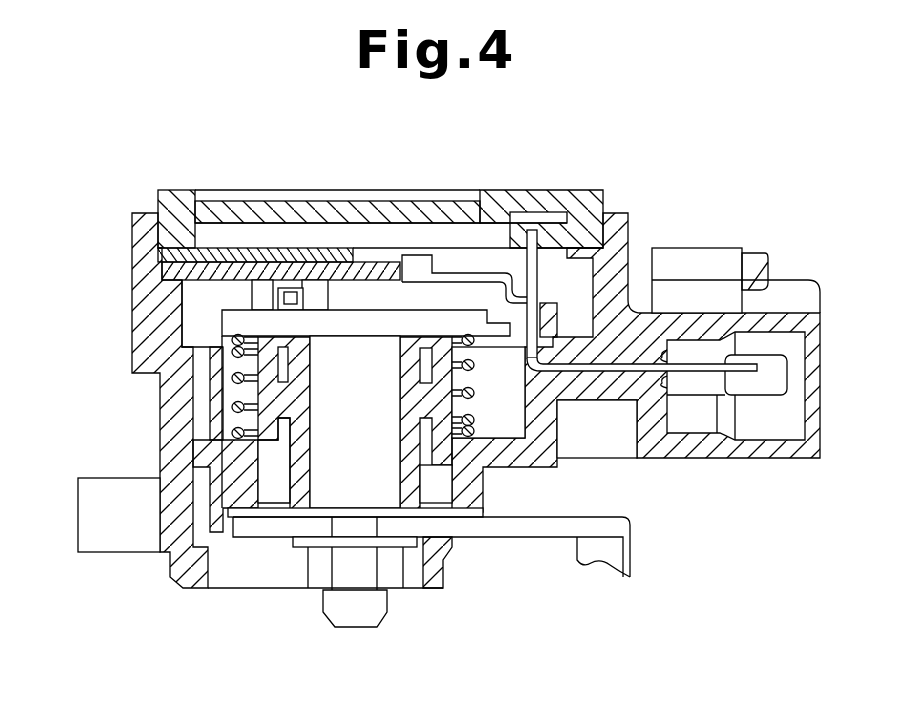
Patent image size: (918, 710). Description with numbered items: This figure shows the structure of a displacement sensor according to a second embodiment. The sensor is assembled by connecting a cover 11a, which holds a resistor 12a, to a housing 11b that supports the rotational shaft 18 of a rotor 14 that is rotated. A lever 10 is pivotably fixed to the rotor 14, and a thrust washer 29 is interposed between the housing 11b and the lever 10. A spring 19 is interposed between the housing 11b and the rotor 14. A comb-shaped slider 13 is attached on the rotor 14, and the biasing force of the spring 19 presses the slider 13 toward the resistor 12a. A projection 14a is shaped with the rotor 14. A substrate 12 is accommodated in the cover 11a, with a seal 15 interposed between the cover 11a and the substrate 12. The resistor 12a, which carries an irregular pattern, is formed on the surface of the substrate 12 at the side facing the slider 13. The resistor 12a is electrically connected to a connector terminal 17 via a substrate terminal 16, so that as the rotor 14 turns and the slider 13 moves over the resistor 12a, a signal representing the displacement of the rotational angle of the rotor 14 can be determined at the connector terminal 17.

The lever 10 is at (623, 527).
The cover 11a is at (180, 194).
The housing 11b is at (165, 445).
The substrate 12 is at (160, 268).
The resistor 12a is at (213, 281).
The comb-shaped slider 13 is at (318, 292).
The rotor 14 is at (225, 320).
The projection 14a is at (292, 300).
The seal 15 is at (243, 256).
The substrate terminal 16 is at (452, 277).
The connector terminal 17 is at (697, 365).
The rotational shaft 18 is at (318, 498).
The spring 19 is at (478, 368).
The thrust washer 29 is at (462, 512).